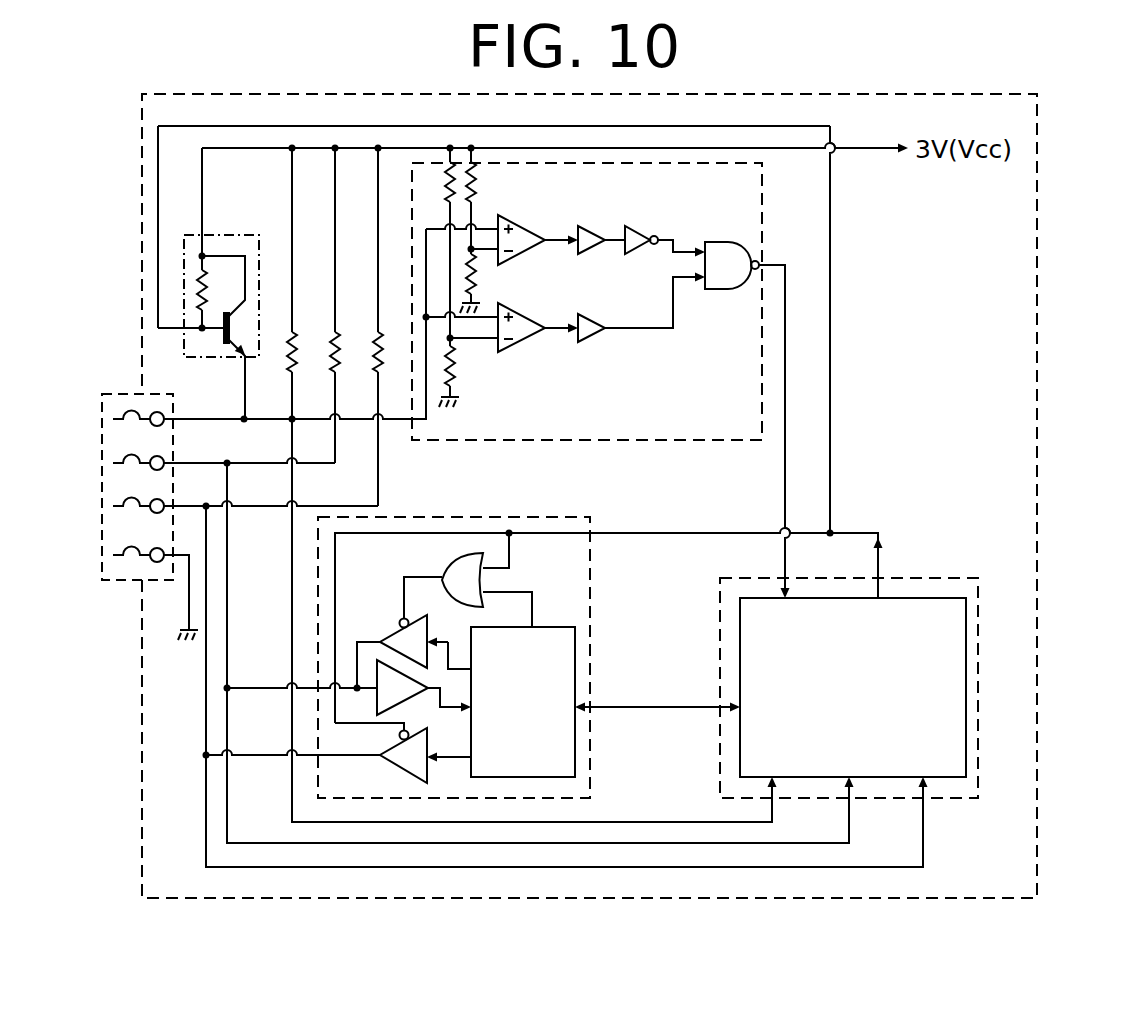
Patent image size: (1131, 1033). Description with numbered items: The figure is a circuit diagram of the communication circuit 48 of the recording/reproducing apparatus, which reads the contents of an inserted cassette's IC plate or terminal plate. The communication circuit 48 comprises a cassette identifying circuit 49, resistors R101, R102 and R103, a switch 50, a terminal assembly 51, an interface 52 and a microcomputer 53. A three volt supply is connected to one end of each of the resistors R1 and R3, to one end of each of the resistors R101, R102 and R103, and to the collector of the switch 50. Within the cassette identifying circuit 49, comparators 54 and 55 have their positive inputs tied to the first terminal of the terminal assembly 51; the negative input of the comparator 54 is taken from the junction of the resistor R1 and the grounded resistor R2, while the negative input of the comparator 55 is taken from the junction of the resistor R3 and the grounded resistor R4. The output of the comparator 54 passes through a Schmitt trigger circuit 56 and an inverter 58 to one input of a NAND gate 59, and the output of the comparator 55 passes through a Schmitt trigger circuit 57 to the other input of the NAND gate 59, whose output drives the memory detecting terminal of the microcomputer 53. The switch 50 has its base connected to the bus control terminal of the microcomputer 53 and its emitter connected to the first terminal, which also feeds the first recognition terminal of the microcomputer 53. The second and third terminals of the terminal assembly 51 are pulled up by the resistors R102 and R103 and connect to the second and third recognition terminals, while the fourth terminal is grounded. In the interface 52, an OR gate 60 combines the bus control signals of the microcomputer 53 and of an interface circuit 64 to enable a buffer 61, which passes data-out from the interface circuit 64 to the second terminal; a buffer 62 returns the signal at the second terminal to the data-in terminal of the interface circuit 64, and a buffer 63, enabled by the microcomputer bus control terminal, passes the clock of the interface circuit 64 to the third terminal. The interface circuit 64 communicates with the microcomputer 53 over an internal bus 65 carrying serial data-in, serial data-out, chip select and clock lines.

The communication circuit 48 is at (1052, 160).
The cassette identifying circuit 49 is at (608, 420).
The switch 50 is at (256, 358).
The terminal assembly 51 is at (120, 393).
The interface 52 is at (436, 517).
The microcomputer 53 is at (717, 622).
The comparator 54 is at (530, 226).
The comparator 55 is at (533, 312).
The Schmitt trigger circuit 56 is at (598, 226).
The Schmitt trigger circuit 57 is at (601, 314).
The inverter 58 is at (648, 226).
The NAND gate 59 is at (732, 265).
The OR gate 60 is at (487, 580).
The buffer 61 is at (414, 632).
The buffer 62 is at (424, 687).
The buffer 63 is at (425, 755).
The interface circuit 64 is at (558, 627).
The internal bus 65 is at (655, 712).
The resistor R1 is at (487, 201).
The resistor R2 is at (484, 283).
The resistor R3 is at (434, 247).
The resistor R4 is at (463, 376).
The resistor R101 is at (302, 263).
The resistor R102 is at (345, 305).
The resistor R103 is at (388, 327).